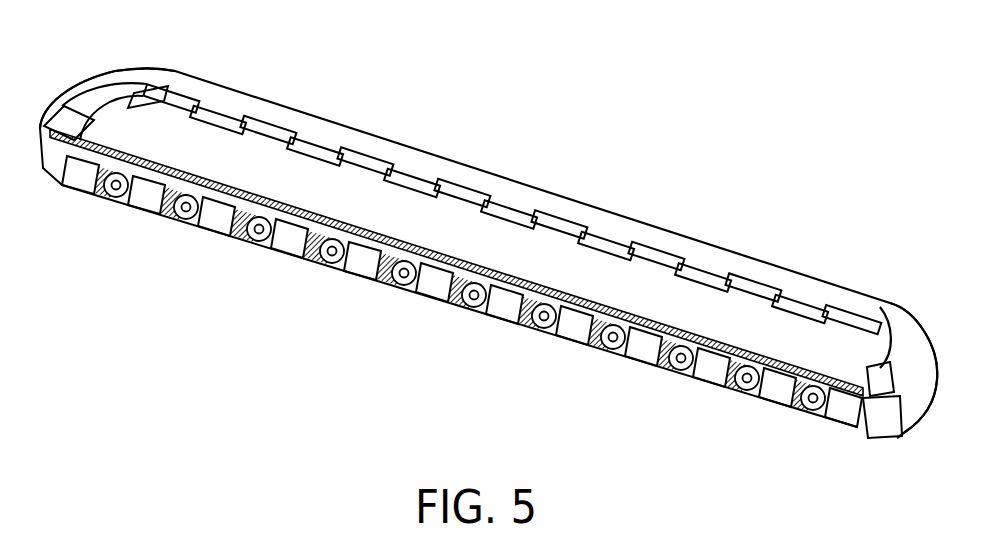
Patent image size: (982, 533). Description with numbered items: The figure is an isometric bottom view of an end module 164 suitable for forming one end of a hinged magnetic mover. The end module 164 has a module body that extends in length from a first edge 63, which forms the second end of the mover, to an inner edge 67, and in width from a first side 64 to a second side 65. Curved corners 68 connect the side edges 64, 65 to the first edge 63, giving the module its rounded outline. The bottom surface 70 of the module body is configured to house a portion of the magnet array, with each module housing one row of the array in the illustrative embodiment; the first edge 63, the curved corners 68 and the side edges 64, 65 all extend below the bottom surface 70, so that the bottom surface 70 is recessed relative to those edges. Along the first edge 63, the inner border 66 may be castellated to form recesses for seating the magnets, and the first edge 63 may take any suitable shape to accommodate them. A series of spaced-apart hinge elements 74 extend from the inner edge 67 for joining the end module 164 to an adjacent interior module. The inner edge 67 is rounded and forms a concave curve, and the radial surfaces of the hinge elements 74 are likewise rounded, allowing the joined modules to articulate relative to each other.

The end module 164 is at (509, 107).
The first edge 63 is at (601, 201).
The first side 64 is at (43, 114).
The second side 65 is at (914, 430).
The inner border 66 is at (218, 130).
The inner edge 67 is at (66, 160).
The curved corners 68 is at (131, 68).
The bottom surface 70 is at (275, 182).
The hinge elements 74 is at (762, 412).